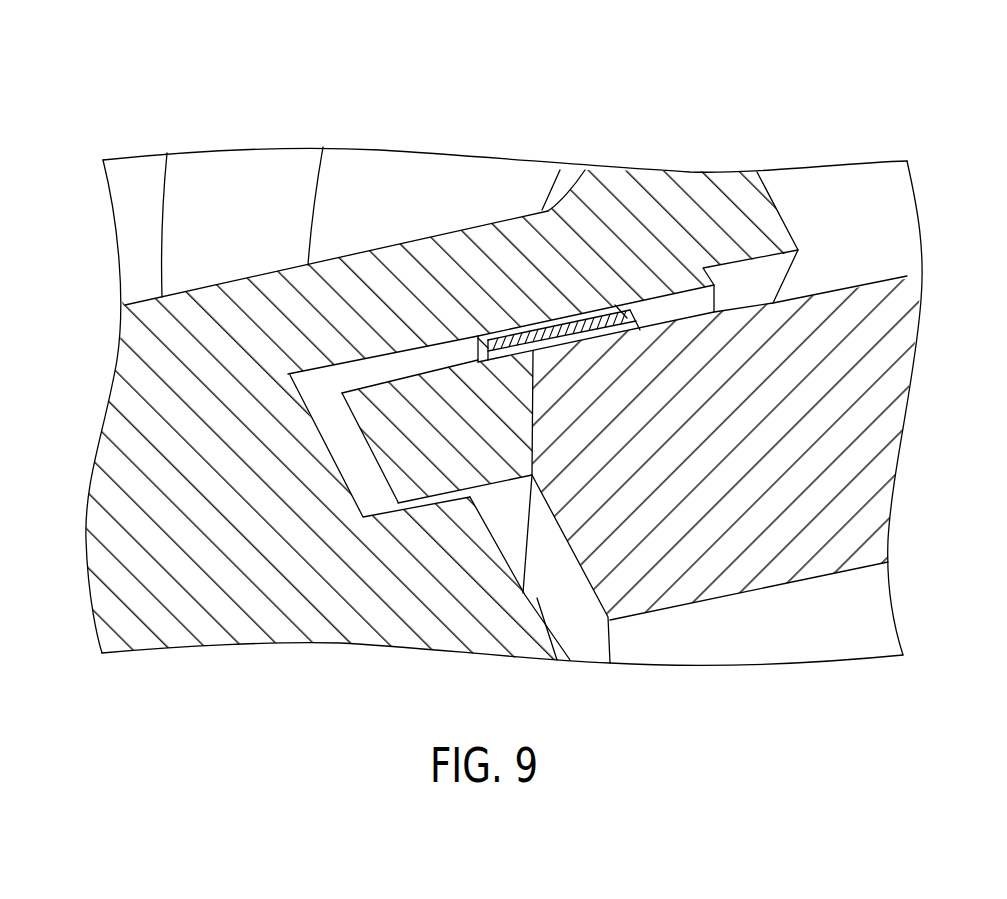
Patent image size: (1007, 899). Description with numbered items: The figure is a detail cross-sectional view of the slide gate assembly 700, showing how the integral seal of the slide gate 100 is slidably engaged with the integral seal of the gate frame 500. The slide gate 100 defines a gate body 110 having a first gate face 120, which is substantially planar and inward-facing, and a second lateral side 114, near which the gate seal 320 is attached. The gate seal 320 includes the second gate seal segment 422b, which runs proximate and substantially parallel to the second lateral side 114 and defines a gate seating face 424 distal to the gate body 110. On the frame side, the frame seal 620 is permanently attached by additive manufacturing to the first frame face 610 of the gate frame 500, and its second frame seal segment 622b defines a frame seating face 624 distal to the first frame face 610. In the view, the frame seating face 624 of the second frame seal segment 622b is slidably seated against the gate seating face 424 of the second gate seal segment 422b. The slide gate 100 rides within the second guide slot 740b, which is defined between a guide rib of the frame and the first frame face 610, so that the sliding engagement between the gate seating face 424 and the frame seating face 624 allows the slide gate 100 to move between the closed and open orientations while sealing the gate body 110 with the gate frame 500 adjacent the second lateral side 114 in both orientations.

The slide gate assembly 700 is at (240, 85).
The gate frame 500 is at (207, 443).
The slide gate 100 is at (876, 401).
The gate body 110 is at (855, 465).
The first gate face 120 is at (898, 266).
The first frame face 610 is at (393, 367).
The second guide slot 740b is at (324, 392).
The second lateral side 114 is at (367, 464).
The frame seating face 624 is at (534, 362).
The frame seal 620 is at (546, 327).
The second frame seal segment 622b is at (546, 327).
The gate seating face 424 is at (582, 314).
The gate seal 320 is at (607, 333).
The second gate seal segment 422b is at (607, 333).